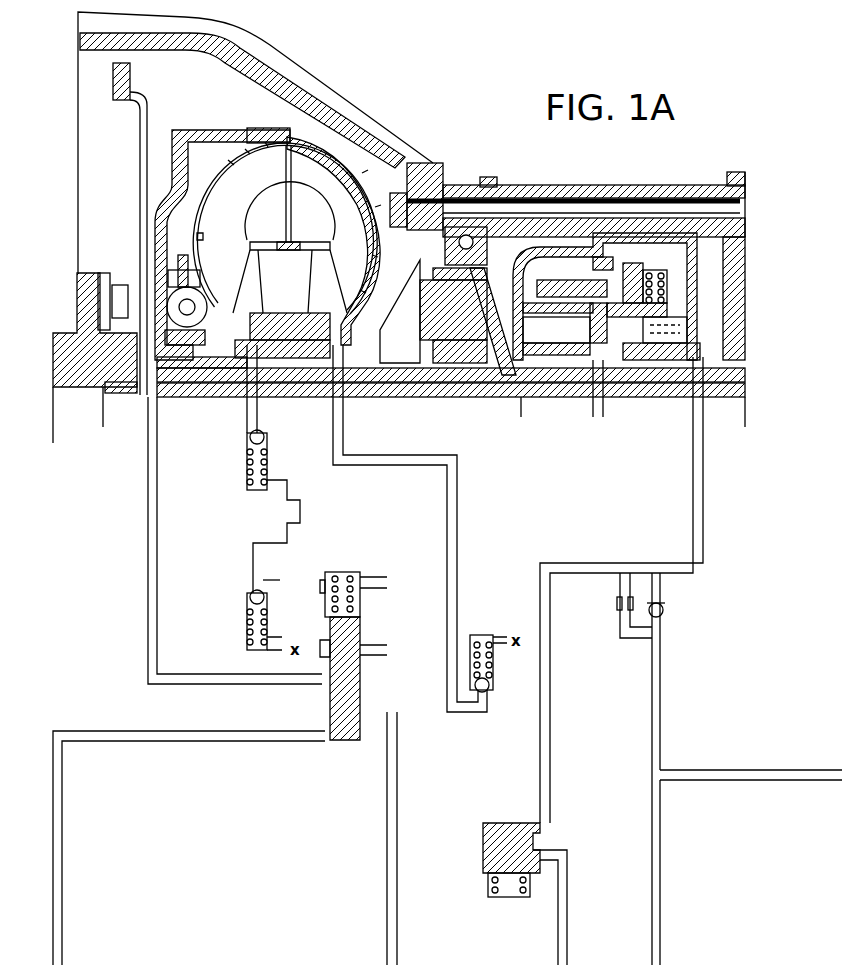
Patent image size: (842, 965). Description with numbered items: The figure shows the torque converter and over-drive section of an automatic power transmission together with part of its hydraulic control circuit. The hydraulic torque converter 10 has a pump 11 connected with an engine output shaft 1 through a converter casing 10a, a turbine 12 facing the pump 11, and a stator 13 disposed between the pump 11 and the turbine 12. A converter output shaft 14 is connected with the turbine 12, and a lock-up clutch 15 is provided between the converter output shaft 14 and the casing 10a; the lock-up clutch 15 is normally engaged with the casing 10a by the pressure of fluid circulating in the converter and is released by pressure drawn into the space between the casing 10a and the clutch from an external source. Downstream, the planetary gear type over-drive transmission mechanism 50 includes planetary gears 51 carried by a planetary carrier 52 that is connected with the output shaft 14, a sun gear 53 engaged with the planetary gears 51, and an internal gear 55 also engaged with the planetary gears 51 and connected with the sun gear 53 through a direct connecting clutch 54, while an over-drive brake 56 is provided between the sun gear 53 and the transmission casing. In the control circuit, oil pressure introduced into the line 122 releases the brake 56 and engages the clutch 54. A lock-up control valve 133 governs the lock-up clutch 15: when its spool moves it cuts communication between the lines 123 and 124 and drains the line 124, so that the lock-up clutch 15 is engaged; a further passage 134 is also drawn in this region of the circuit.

The engine output shaft 1 is at (75, 377).
The hydraulic torque converter 10 is at (333, 143).
The converter casing 10a is at (287, 137).
The pump 11 is at (360, 183).
The turbine 12 is at (227, 200).
The stator 13 is at (300, 270).
The converter output shaft 14 is at (192, 393).
The lock-up clutch 15 is at (163, 217).
The planetary gear type over-drive transmission mechanism 50 is at (603, 245).
The planetary gears 51 is at (547, 280).
The planetary carrier 52 is at (597, 363).
The sun gear 53 is at (540, 367).
The direct connecting clutch 54 is at (663, 287).
The internal gear 55 is at (560, 280).
The over-drive brake 56 is at (653, 277).
The line 122 is at (675, 773).
The line 123 is at (397, 870).
The line 124 is at (148, 580).
The lock-up control valve 133 is at (370, 573).
The conduit 134 is at (680, 360).